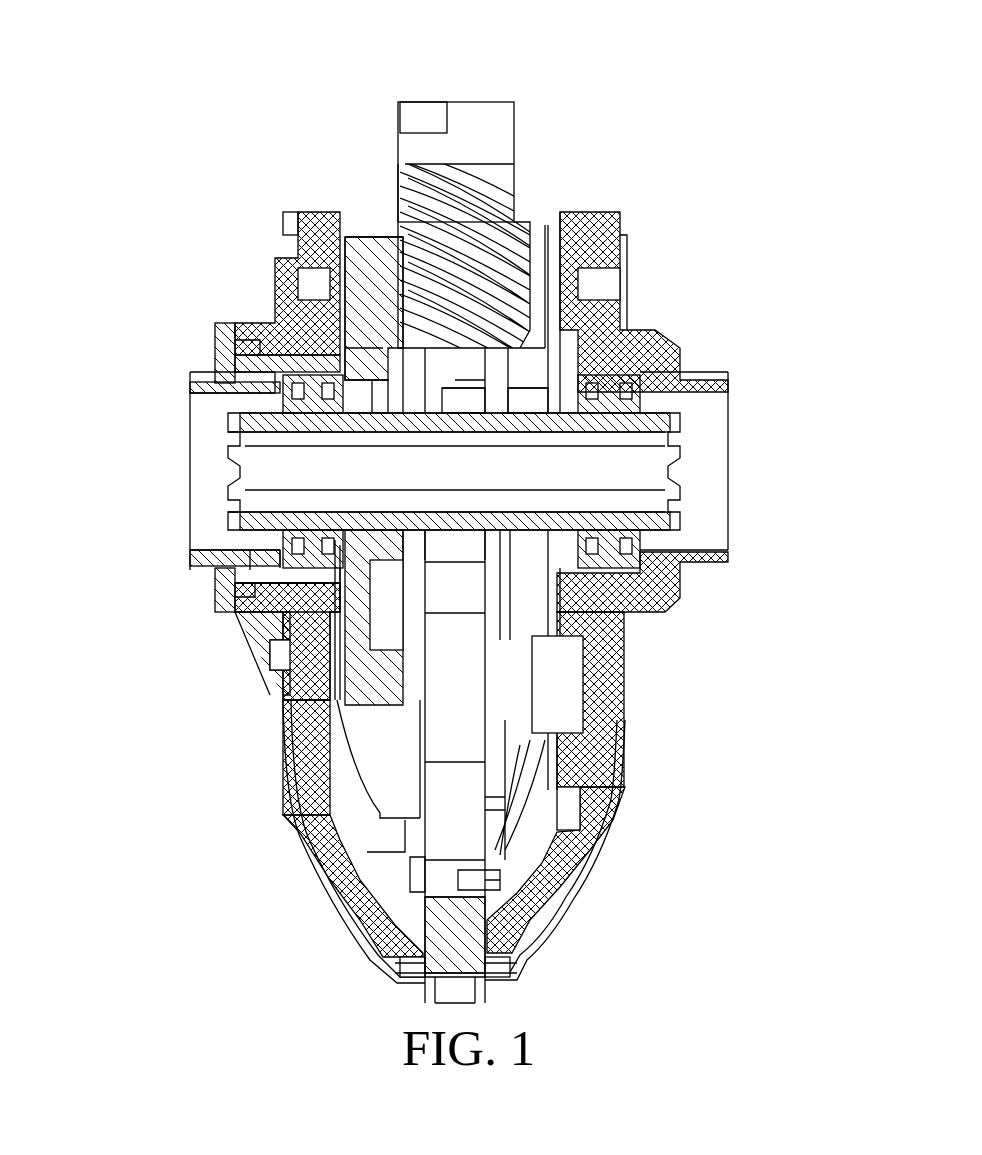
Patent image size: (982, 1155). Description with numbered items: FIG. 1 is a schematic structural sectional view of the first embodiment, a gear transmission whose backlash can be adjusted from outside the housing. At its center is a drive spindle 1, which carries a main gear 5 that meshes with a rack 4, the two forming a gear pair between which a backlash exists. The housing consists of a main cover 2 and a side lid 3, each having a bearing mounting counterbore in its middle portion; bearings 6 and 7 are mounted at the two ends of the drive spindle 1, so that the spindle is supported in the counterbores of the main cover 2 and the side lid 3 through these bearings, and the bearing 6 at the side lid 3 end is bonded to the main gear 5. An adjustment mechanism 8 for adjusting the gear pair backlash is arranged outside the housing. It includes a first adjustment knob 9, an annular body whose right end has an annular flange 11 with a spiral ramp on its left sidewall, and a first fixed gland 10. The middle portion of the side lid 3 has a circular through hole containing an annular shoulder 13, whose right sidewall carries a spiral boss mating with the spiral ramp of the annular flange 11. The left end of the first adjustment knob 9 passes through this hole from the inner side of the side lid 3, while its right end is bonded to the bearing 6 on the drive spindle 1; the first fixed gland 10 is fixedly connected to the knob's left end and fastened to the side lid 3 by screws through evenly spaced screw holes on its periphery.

The drive spindle 1 is at (625, 470).
The main cover 2 is at (603, 760).
The side lid 3 is at (290, 775).
The rack 4 is at (485, 135).
The main gear 5 is at (340, 212).
The bearing 6 is at (320, 385).
The bearing 7 is at (658, 330).
The adjustment mechanism 8 is at (215, 320).
The first adjustment knob 9 is at (255, 583).
The first fixed gland 10 is at (270, 677).
The annular flange 11 is at (215, 350).
The annular shoulder 13 is at (200, 560).